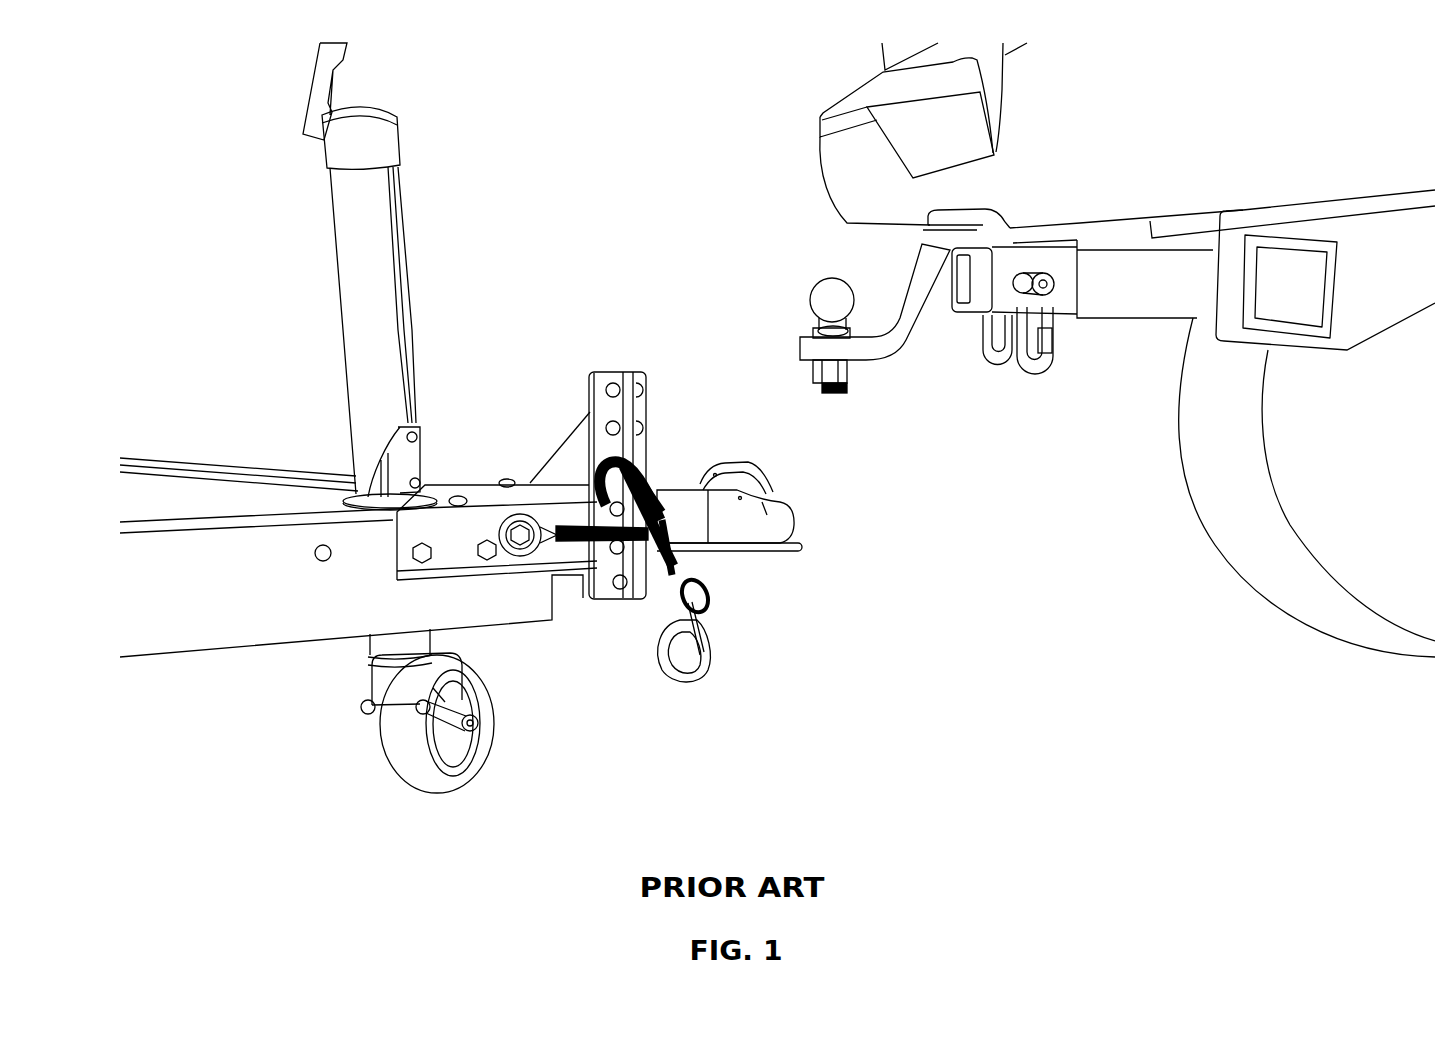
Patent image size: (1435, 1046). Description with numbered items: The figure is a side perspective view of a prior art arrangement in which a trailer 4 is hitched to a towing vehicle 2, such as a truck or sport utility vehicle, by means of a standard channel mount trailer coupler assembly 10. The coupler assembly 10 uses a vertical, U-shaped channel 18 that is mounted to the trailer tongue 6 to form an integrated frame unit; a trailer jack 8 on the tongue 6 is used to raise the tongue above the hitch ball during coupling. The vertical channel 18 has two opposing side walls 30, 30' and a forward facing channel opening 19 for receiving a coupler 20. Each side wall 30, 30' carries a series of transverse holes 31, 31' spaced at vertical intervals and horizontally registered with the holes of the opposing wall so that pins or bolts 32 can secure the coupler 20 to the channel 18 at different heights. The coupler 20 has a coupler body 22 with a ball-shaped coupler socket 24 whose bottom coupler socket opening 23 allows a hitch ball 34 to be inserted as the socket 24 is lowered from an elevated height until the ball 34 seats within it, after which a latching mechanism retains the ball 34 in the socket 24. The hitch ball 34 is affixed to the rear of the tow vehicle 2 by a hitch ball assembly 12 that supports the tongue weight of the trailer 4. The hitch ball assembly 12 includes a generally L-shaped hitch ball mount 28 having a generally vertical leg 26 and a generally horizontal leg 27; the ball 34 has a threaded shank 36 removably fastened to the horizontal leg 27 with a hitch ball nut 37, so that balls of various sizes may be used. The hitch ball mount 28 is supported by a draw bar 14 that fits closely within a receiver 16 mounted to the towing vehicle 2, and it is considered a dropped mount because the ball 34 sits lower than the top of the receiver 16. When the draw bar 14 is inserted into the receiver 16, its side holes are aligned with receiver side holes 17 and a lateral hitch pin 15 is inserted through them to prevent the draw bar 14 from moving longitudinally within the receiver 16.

The towing vehicle 2 is at (1161, 157).
The trailer 4 is at (217, 609).
The trailer tongue 6 is at (537, 590).
The trailer jack 8 is at (363, 248).
The channel mount trailer coupler assembly 10 is at (549, 443).
The hitch ball assembly 12 is at (912, 345).
The draw bar 14 is at (941, 312).
The hitch pin 15 is at (1045, 285).
The receiver 16 is at (977, 258).
The receiver side holes 17 is at (1015, 270).
The vertical channel 18 is at (566, 369).
The channel opening 19 is at (638, 575).
The coupler 20 is at (733, 530).
The coupler body 22 is at (685, 487).
The coupler socket opening 23 is at (790, 548).
The coupler socket 24 is at (784, 518).
The vertical leg 26 is at (943, 240).
The horizontal leg 27 is at (813, 345).
The hitch ball mount 28 is at (873, 350).
The side wall 30 is at (520, 326).
The side wall 30' is at (646, 416).
The transverse holes 31 is at (595, 412).
The transverse holes 31' is at (697, 541).
The pins or bolts 32 is at (690, 563).
The hitch ball 34 is at (818, 298).
The threaded shank 36 is at (827, 380).
The hitch ball nut 37 is at (850, 385).